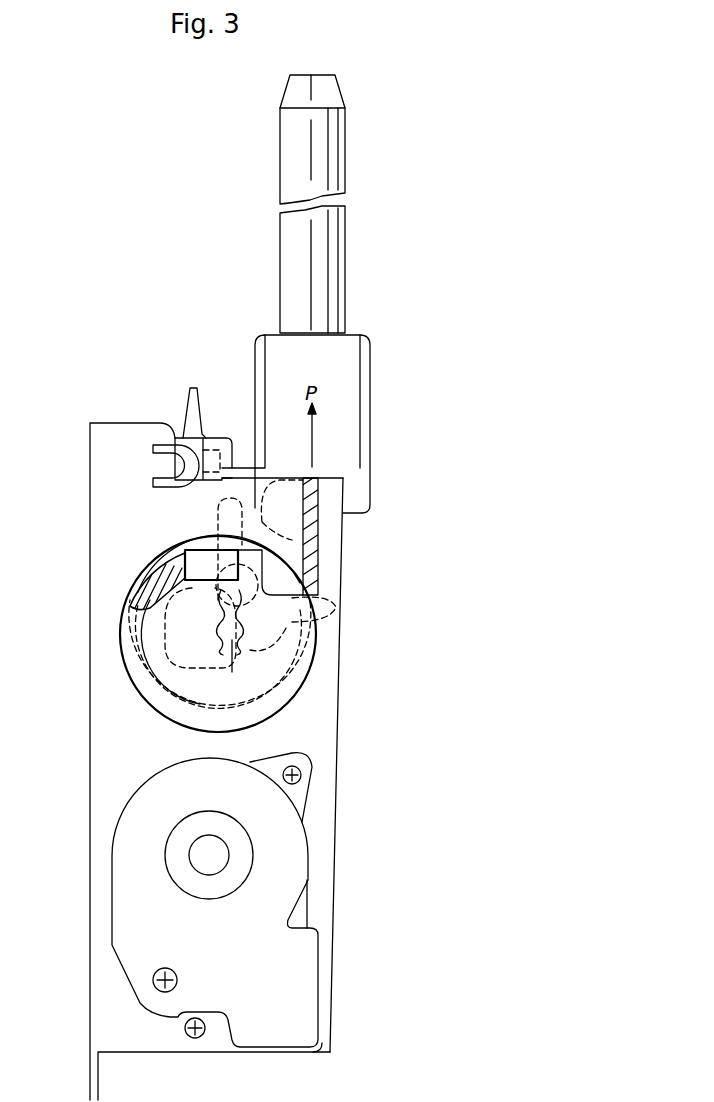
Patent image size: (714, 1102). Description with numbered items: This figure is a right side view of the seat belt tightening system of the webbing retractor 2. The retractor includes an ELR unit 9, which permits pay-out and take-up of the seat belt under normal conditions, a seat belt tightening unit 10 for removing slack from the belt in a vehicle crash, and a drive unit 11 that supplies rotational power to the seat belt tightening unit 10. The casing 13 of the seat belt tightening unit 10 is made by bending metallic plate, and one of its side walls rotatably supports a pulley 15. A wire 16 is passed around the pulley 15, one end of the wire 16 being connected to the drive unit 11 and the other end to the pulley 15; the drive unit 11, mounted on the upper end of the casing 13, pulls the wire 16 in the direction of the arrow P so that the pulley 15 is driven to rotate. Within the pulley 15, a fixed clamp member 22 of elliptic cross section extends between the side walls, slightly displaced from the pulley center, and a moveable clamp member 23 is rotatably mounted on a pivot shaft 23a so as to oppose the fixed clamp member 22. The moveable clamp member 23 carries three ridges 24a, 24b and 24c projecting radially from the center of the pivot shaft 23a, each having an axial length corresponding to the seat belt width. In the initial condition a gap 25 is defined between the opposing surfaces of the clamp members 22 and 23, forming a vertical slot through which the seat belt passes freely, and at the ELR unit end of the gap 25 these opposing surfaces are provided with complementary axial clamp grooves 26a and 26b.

The webbing retractor 2 is at (450, 511).
The ELR unit 9 is at (290, 863).
The seat belt tightening unit 10 is at (157, 563).
The drive unit 11 is at (345, 412).
The casing 13 is at (95, 582).
The pulley 15 is at (132, 683).
The wire 16 is at (318, 556).
The fixed clamp member 22 is at (163, 637).
The moveable clamp member 23 is at (272, 633).
The pivot shaft 23a is at (213, 572).
The ridge 24a is at (240, 502).
The ridge 24b is at (300, 538).
The ridge 24c is at (340, 606).
The gap 25 is at (232, 670).
The clamp grooves 26a is at (222, 655).
The clamp grooves 26b is at (238, 642).